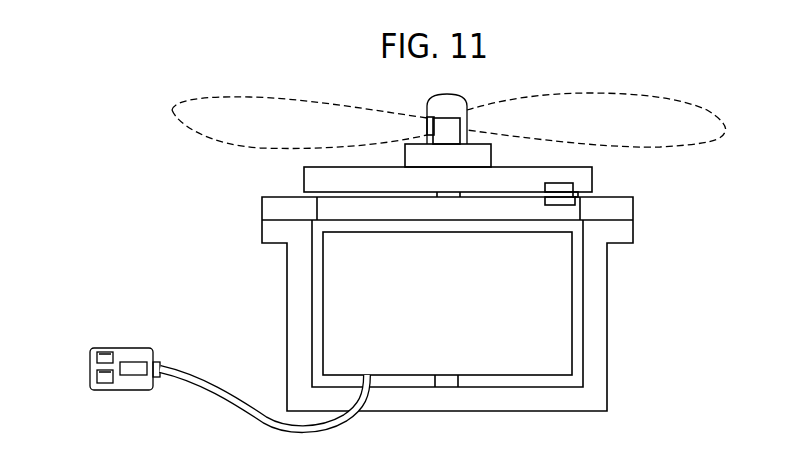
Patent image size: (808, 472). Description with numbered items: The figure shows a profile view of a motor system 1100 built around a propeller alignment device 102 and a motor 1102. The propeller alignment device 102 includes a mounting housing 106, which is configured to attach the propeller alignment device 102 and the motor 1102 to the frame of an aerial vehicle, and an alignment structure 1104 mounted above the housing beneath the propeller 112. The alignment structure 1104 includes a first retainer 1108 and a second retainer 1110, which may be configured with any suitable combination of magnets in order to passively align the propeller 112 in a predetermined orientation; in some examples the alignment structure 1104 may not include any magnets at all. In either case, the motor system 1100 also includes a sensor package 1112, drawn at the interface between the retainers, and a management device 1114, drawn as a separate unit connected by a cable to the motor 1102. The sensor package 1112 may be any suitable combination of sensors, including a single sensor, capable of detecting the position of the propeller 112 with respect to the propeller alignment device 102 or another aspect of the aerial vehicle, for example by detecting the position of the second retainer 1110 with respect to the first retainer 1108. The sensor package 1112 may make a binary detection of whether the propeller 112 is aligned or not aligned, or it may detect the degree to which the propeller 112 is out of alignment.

The motor system 1100 is at (600, 74).
The propeller 112 is at (698, 104).
The alignment structure 1104 is at (619, 162).
The second retainer 1110 is at (307, 179).
The sensor package 1112 is at (588, 203).
The first retainer 1108 is at (273, 208).
The propeller alignment device 102 is at (645, 239).
The mounting housing 106 is at (602, 380).
The motor 1102 is at (476, 362).
The management device 1114 is at (122, 348).